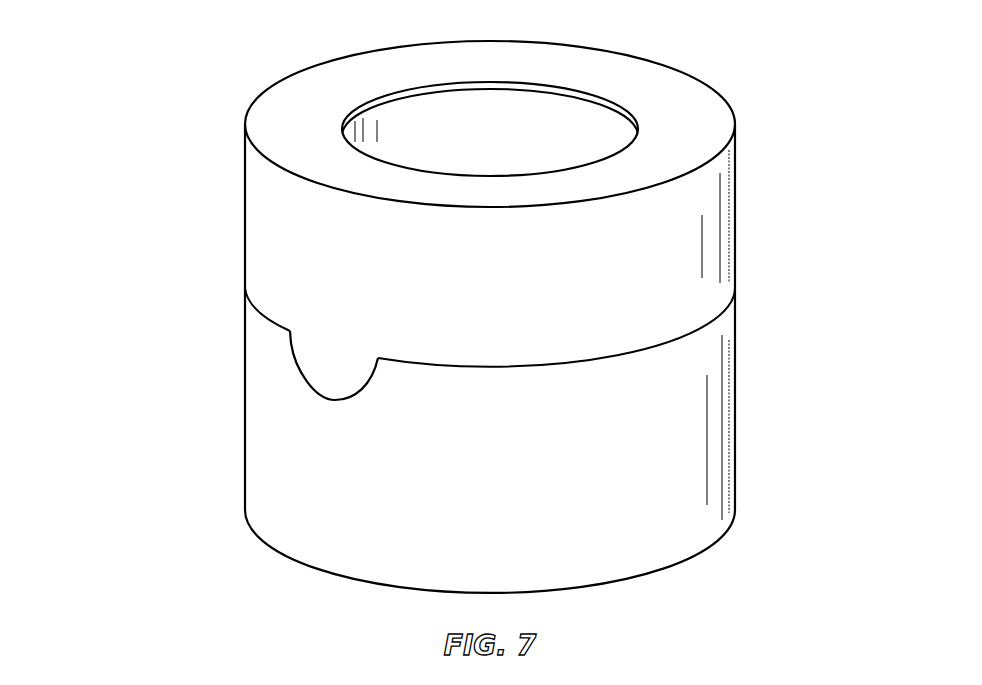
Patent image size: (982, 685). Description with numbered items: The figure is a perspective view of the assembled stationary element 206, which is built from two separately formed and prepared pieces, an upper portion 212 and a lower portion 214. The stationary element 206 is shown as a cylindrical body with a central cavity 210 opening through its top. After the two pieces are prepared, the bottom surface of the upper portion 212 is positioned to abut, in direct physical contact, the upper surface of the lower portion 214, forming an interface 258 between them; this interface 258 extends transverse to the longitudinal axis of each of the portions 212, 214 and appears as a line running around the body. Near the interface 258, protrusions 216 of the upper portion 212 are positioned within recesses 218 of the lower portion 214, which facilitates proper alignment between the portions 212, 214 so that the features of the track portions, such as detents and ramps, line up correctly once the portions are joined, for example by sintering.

The stationary element 206 is at (156, 87).
The cavity 210 is at (578, 120).
The upper portion 212 is at (705, 245).
The interface 258 is at (712, 322).
The lower portion 214 is at (687, 476).
The protrusions 216 is at (329, 370).
The recesses 218 is at (320, 397).